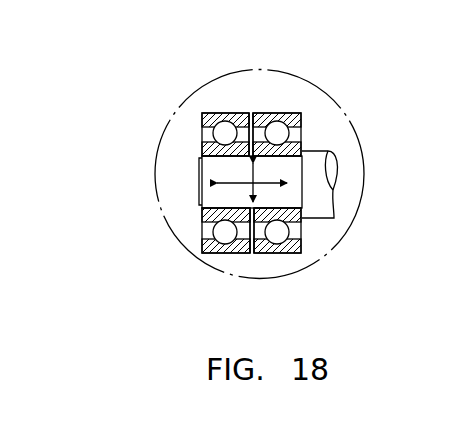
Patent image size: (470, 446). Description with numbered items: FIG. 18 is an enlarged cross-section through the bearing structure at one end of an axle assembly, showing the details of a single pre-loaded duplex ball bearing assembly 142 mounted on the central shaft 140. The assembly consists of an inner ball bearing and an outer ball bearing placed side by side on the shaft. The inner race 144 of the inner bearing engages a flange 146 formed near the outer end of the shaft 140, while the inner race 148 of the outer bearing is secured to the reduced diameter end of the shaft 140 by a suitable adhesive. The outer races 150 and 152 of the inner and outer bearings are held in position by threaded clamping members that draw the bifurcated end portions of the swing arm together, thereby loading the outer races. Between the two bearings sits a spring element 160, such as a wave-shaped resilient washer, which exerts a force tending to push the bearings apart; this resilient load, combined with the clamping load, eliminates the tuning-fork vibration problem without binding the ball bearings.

The central shaft 140 is at (320, 193).
The bearing assembly 142 is at (324, 130).
The inner race of the inner roller bearing 144 is at (302, 199).
The flange 146 is at (333, 151).
The inner race of the outer roller bearing 148 is at (201, 161).
The outer race of the inner bearing 150 is at (290, 115).
The outer race of the outer bearing 152 is at (222, 113).
The spring element 160 is at (253, 113).